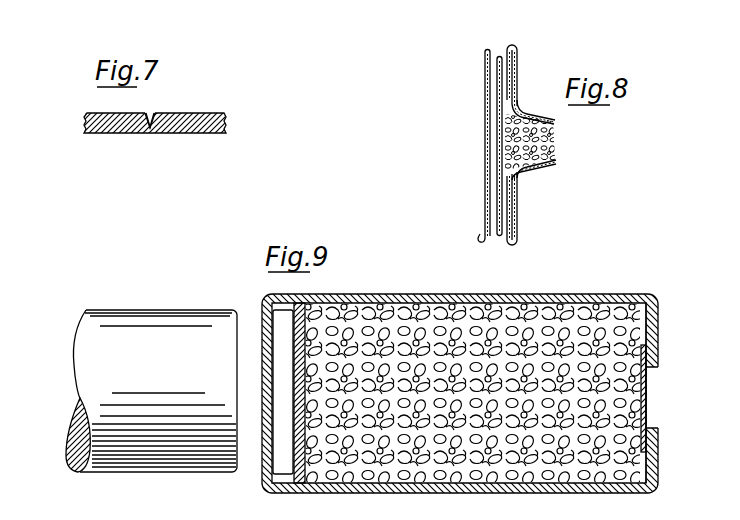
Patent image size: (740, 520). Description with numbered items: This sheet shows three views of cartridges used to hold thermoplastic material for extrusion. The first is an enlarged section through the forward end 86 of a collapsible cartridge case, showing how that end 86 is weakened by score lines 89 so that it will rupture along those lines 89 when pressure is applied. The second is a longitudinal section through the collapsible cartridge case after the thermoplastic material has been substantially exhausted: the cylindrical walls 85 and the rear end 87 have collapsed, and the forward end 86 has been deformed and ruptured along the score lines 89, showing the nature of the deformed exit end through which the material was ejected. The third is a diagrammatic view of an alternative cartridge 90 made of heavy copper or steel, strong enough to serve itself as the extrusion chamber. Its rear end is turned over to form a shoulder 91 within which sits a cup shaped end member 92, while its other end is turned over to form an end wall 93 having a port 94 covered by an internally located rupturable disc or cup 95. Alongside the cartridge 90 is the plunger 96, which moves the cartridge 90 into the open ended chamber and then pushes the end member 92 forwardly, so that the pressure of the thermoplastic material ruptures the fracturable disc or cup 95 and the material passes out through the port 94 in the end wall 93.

In FIG. 8, the cylindrical walls 85 is at (503, 47).
In FIG. 7, the integral forward end 86 is at (170, 136).
In FIG. 8, the integral forward end 86 is at (548, 170).
In FIG. 8, the rear end 87 is at (487, 130).
In FIG. 7, the score lines 89 is at (152, 118).
In FIG. 9, the cartridge 90 is at (563, 300).
In FIG. 9, the shoulder 91 is at (262, 306).
In FIG. 9, the cup shaped end member 92 is at (292, 440).
In FIG. 9, the end wall 93 is at (653, 357).
In FIG. 9, the port 94 is at (655, 380).
In FIG. 9, the rupturable disc or cup 95 is at (640, 410).
In FIG. 9, the plunger 96 is at (88, 360).